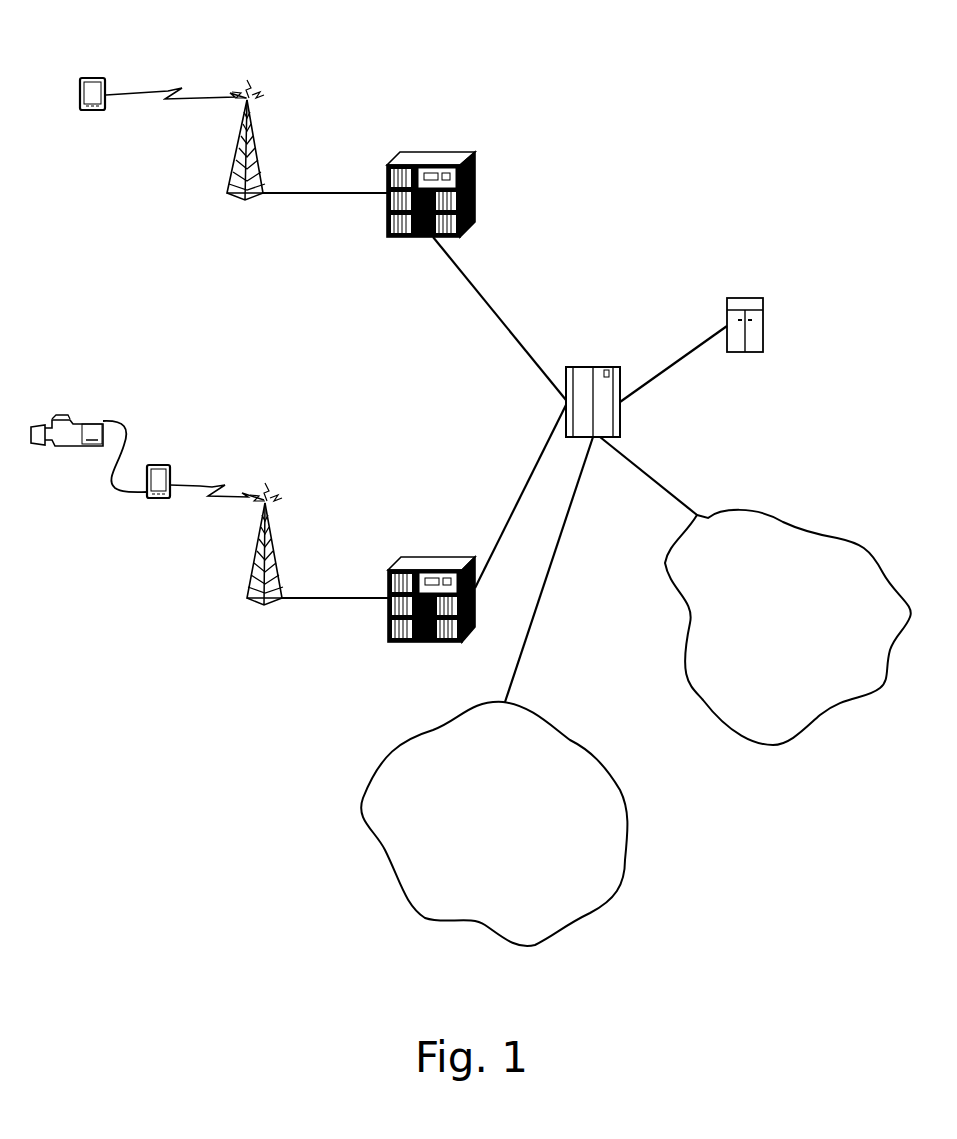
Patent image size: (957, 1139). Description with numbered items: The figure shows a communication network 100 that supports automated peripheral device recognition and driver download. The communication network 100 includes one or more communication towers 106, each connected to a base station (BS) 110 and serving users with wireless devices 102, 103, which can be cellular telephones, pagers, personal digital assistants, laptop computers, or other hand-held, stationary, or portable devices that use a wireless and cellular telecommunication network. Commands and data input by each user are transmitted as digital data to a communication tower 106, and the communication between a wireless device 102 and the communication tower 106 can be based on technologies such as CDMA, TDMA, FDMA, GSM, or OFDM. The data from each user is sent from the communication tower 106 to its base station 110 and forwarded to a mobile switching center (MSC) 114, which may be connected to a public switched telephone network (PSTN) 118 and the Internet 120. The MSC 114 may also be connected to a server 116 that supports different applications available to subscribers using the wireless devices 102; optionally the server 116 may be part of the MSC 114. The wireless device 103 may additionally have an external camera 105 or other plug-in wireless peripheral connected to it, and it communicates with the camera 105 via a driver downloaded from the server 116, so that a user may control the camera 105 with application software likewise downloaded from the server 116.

The communication network 100 is at (546, 67).
The wireless device 102 is at (106, 87).
The wireless device 103 is at (170, 472).
The external camera 105 is at (65, 420).
The communication tower 106 is at (250, 128).
The base station (BS) 110 is at (475, 180).
The mobile switching center (MSC) 114 is at (608, 367).
The server 116 is at (758, 298).
The public switched telephone network (PSTN) 118 is at (783, 522).
The Internet 120 is at (577, 742).